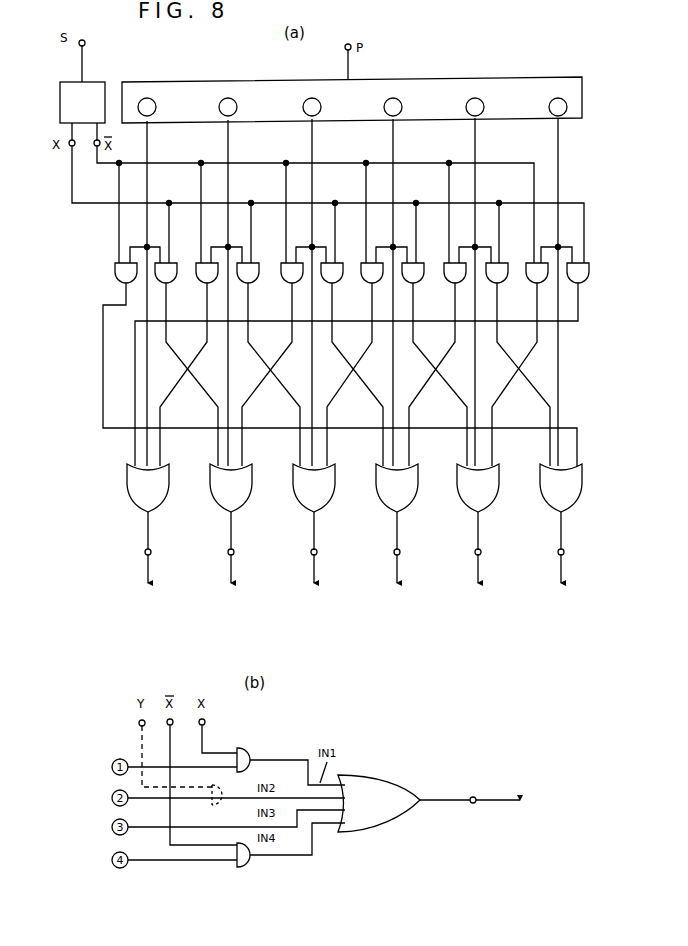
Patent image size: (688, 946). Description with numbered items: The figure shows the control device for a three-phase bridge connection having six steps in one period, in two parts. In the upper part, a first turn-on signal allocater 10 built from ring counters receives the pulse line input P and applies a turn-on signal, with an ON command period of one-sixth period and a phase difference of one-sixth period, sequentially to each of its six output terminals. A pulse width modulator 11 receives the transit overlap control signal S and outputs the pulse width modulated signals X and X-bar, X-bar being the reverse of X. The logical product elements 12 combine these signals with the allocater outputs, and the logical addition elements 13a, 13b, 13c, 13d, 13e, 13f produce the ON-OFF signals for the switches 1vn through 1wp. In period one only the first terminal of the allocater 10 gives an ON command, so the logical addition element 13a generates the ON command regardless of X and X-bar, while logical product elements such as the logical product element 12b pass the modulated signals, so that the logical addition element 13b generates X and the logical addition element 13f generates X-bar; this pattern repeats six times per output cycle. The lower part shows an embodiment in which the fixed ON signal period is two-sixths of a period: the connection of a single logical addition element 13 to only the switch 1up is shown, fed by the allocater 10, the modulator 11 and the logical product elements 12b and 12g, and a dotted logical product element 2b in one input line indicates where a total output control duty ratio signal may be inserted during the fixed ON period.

The first turn-on signal allocater 10 is at (162, 80).
The pulse width modulator 11 is at (93, 82).
The logical product elements 12 is at (115, 273).
The logical product element 12b is at (244, 748).
The logical product element 12g is at (250, 865).
The dashed optional gate for input 2 2b is at (213, 805).
The logical addition element 13 is at (104, 509).
The logical addition element 13a is at (166, 500).
The logical addition element 13b is at (249, 500).
The logical addition element 13c is at (332, 500).
The logical addition element 13d is at (415, 500).
The logical addition element 13e is at (496, 500).
The logical addition element 13f is at (579, 500).